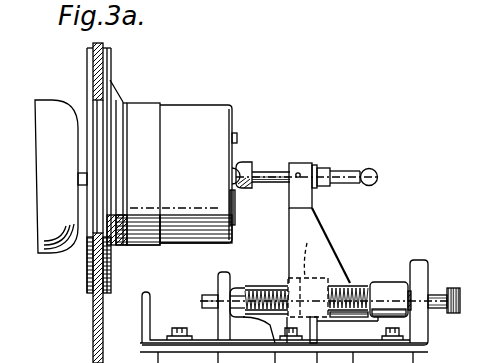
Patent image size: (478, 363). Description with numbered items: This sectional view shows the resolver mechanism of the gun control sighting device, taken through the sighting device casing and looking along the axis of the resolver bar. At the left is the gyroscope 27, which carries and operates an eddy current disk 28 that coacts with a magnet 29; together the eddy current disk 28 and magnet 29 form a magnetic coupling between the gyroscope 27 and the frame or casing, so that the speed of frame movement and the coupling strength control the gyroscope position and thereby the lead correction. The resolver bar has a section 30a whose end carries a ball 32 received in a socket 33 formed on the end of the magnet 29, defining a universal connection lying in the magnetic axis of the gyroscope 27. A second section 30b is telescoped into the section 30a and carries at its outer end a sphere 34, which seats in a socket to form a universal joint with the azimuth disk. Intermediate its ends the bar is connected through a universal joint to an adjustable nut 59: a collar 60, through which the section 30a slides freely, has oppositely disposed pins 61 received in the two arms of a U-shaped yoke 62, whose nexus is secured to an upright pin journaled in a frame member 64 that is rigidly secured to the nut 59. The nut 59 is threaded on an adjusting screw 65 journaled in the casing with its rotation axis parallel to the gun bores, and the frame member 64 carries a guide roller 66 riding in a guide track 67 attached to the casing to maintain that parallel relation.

The gyroscope 27 is at (46, 101).
The eddy current disk 28 is at (126, 165).
The magnet 29 is at (192, 112).
The section of resolver bar 30a is at (276, 183).
The telescoping section of resolver bar 30b is at (345, 172).
The ball 32 is at (229, 176).
The socket 33 is at (244, 161).
The sphere 34 is at (379, 178).
The adjustable nut 59 is at (384, 282).
The collar 60 is at (313, 165).
The pins 61 is at (297, 172).
The U-shaped yoke 62 is at (305, 201).
The frame member 64 is at (318, 237).
The adjusting screw 65 is at (343, 290).
The guide roller 66 is at (307, 288).
The guide track 67 is at (268, 290).